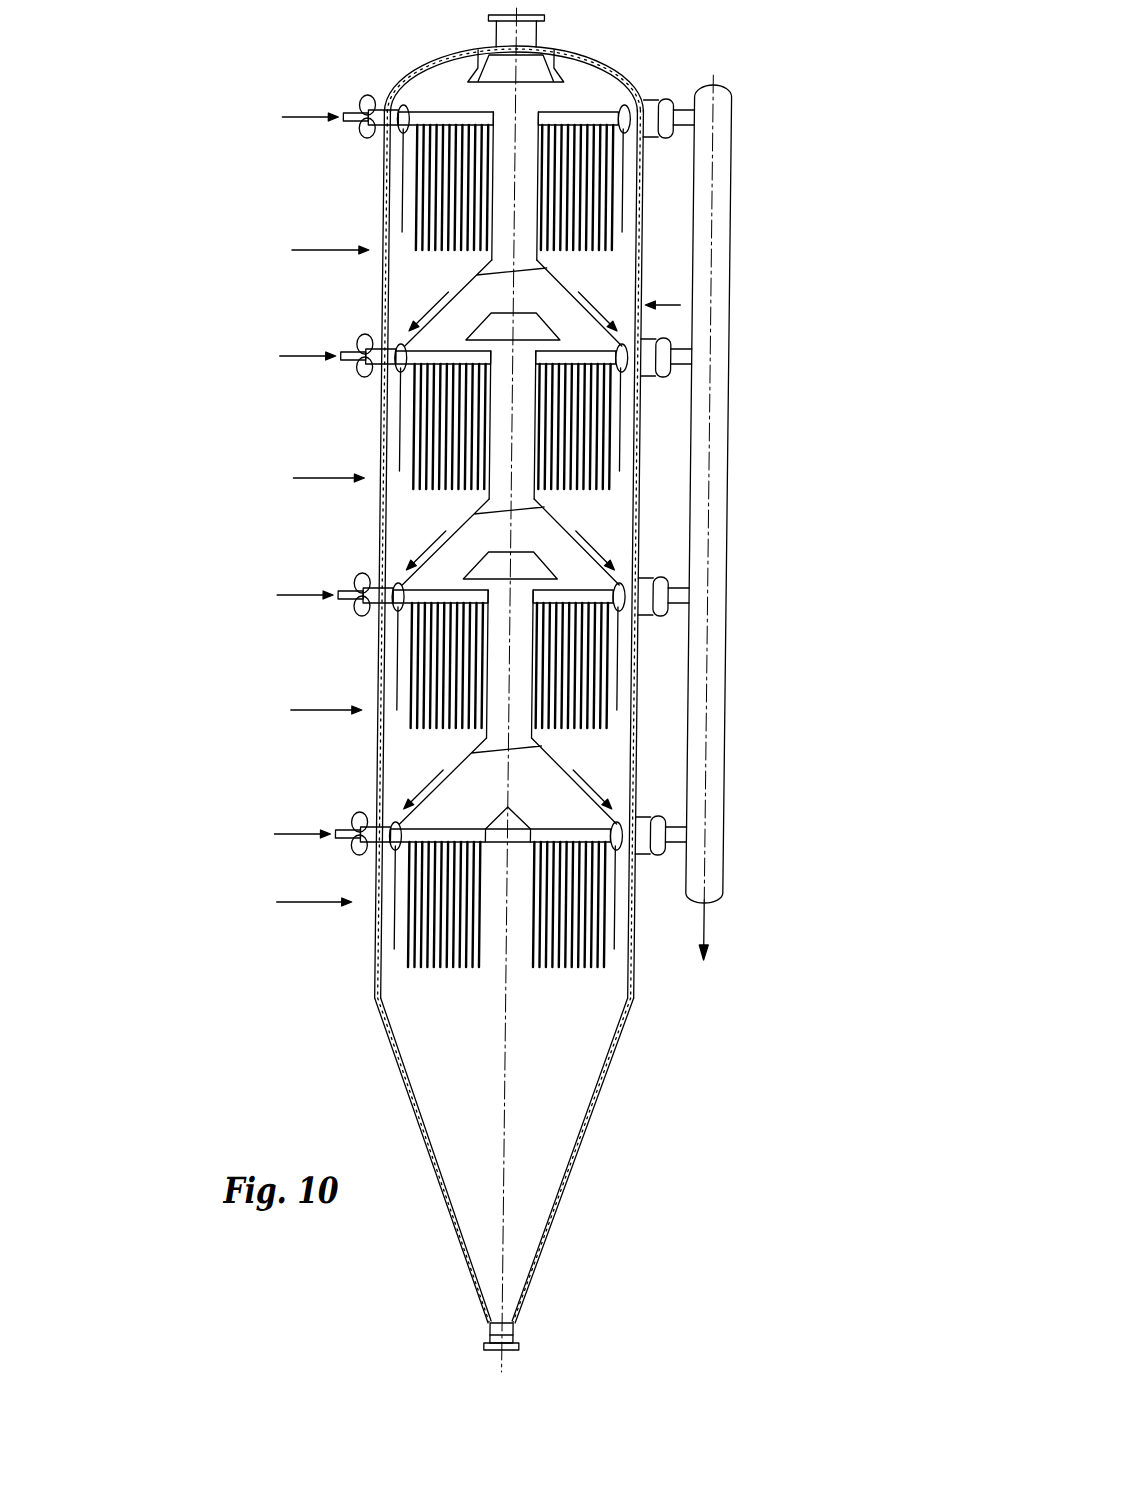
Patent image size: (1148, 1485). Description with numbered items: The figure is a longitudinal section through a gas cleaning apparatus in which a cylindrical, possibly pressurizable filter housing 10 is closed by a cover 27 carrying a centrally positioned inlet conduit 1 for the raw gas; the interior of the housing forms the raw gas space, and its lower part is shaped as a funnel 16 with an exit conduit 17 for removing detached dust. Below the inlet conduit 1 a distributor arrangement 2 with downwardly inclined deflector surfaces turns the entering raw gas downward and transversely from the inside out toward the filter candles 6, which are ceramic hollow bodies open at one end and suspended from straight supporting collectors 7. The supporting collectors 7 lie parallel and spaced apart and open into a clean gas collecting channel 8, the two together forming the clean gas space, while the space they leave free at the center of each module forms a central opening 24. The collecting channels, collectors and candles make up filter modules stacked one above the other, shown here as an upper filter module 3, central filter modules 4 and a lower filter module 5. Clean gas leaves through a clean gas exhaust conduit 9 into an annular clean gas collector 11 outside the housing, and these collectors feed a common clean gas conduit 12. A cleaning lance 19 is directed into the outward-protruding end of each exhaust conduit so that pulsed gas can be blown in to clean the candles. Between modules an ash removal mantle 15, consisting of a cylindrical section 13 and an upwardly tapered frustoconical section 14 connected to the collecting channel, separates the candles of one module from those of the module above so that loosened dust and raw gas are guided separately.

The inlet conduit 1 is at (538, 32).
The distributor arrangement 2 is at (473, 82).
The upper filter module 3 is at (318, 249).
The central filter module 4 is at (318, 476).
The lower filter module 5 is at (311, 899).
The filter candles 6 is at (478, 213).
The supporting collectors 7 is at (451, 116).
The clean gas collecting channel 8 is at (406, 105).
The clean gas exhaust conduit 9 is at (384, 110).
The filter housing 10 is at (685, 302).
The annular clean gas collector 11 is at (364, 139).
The clean gas conduit 12 is at (716, 855).
The cylindrical section 13 is at (403, 211).
The frustoconical section 14 is at (520, 281).
The ash removal mantle 15 is at (628, 196).
The funnel 16 is at (422, 1124).
The exit conduit 17 is at (528, 1346).
The cleaning lance 19 is at (318, 114).
The central opening 24 is at (504, 126).
The cover 27 is at (607, 79).